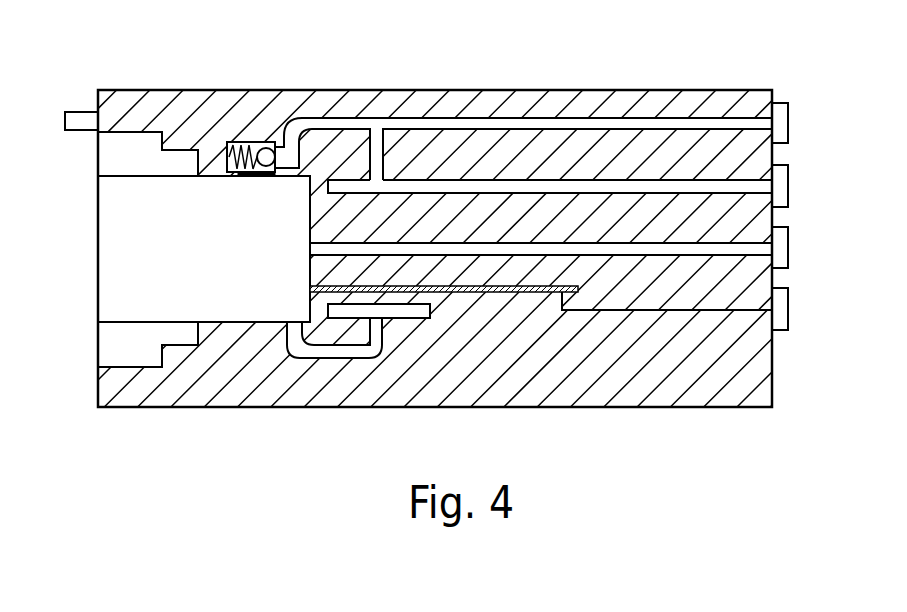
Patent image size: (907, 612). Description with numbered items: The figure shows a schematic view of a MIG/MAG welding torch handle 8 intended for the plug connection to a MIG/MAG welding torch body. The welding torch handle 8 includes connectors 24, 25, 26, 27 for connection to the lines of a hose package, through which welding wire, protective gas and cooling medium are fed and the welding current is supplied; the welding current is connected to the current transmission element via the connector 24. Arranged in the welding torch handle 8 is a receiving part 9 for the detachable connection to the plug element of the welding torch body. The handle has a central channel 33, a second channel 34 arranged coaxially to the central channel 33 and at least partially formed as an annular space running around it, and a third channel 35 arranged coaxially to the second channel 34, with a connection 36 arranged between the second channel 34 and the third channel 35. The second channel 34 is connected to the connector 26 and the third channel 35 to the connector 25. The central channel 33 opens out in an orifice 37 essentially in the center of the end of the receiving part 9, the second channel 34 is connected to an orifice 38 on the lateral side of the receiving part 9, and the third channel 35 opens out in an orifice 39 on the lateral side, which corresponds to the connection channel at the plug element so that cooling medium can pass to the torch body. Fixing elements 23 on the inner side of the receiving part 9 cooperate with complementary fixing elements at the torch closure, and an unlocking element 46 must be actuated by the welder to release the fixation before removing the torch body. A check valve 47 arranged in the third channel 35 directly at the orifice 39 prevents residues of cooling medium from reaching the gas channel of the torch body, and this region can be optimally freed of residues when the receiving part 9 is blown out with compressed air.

The MIG/MAG welding torch handle 8 is at (670, 425).
The receiving part 9 is at (198, 288).
The fixing elements 23 is at (123, 143).
The connector 24 is at (788, 310).
The connector 25 is at (788, 122).
The connector 26 is at (788, 186).
The connector 27 is at (788, 247).
The central channel 33 is at (480, 248).
The second channel 34 is at (662, 188).
The third channel 35 is at (592, 123).
The connection 36 is at (377, 157).
The orifice 37 is at (310, 243).
The orifice 38 is at (290, 320).
The orifice 39 is at (233, 176).
The unlocking element 46 is at (82, 120).
The check valve 47 is at (262, 143).